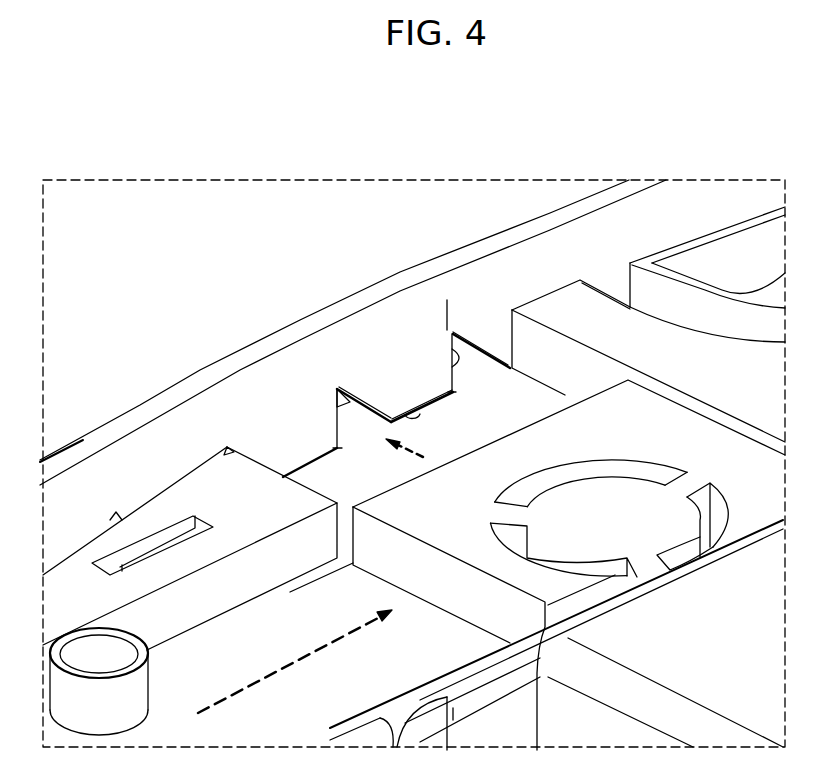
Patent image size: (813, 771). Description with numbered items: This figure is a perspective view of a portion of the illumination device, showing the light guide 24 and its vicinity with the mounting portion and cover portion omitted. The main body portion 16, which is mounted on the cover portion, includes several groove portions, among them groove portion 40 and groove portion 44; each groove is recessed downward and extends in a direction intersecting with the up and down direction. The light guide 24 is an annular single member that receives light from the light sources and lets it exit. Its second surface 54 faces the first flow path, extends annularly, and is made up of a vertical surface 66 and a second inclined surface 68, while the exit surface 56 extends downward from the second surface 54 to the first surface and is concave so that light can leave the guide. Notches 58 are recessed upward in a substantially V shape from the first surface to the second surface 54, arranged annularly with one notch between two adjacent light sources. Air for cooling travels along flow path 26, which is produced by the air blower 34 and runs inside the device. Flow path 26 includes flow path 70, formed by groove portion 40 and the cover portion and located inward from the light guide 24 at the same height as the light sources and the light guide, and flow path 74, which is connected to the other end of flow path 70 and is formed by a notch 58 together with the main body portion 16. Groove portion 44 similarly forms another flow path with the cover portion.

The main body portion 16 is at (238, 492).
The light guide 24 is at (185, 368).
The flow path 26 is at (400, 407).
The air blower 34 is at (372, 447).
The groove portion 40 is at (248, 575).
The groove portion 44 is at (650, 290).
The second surface 54 is at (350, 319).
The exit surface 56 is at (235, 363).
The notch 58 is at (460, 415).
The vertical surface 66 is at (338, 387).
The second inclined surface 68 is at (380, 363).
The flow path 70 is at (267, 640).
The flow path 74 is at (468, 361).